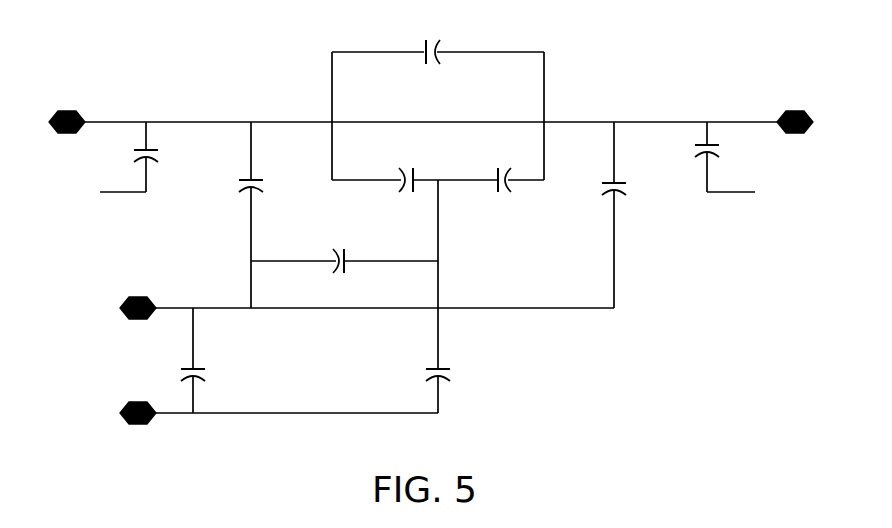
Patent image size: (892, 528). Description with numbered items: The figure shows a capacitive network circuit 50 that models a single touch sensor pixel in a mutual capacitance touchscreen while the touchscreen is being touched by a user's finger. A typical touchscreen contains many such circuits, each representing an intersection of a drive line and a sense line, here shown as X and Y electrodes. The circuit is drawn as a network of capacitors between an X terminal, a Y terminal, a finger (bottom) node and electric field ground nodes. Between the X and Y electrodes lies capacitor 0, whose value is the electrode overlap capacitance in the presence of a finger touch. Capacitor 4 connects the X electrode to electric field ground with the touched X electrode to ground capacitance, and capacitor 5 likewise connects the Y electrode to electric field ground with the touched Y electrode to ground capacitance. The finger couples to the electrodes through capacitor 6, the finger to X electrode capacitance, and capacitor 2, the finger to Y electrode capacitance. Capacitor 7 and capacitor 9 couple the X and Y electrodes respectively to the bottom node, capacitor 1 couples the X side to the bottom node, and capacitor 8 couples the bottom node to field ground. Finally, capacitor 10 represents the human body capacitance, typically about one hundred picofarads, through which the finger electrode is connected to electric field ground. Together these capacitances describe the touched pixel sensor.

The capacitive network circuit 50 is at (431, 219).
The capacitor C0 0 is at (453, 39).
The capacitor C1 1 is at (327, 275).
The capacitor C2 2 is at (493, 157).
The capacitor C4 4 is at (181, 158).
The capacitor C5 5 is at (735, 151).
The capacitor C6 6 is at (398, 181).
The capacitor C7 7 is at (290, 180).
The capacitor C8 8 is at (237, 363).
The capacitor C9 9 is at (653, 185).
The capacitor C10 10 is at (470, 362).